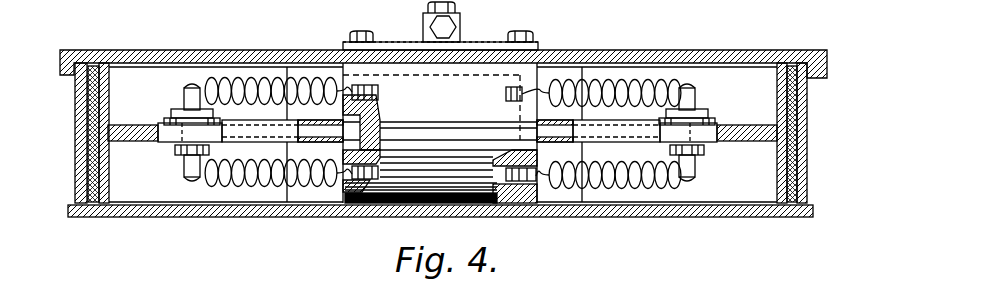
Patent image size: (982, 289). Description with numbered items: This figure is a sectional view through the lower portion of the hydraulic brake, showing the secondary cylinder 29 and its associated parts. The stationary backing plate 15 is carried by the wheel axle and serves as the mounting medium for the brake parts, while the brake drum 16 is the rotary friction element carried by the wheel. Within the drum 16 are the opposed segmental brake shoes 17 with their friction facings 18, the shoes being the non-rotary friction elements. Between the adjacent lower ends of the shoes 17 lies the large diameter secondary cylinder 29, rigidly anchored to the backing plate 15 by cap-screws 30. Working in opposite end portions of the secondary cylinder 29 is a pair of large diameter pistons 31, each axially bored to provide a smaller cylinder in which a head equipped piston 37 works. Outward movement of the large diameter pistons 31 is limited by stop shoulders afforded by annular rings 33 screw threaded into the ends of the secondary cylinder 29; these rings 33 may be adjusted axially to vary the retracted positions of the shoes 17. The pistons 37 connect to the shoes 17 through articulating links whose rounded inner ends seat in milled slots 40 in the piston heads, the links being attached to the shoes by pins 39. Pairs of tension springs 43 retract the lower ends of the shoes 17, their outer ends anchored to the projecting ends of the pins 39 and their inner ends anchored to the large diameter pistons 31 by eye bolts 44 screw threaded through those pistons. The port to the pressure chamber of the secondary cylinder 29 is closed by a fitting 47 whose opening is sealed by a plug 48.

The backing plate 15 is at (804, 52).
The brake drum 16 is at (794, 218).
The segmental brake shoes 17 is at (135, 141).
The friction facings 18 is at (92, 163).
The secondary cylinder 29 is at (417, 212).
The cap-screws 30 is at (372, 23).
The large diameter pistons 31 is at (378, 105).
The annular stop rings 33 is at (343, 196).
The head equipped piston 37 is at (395, 140).
The pins 39 is at (184, 101).
The milled slots 40 is at (352, 132).
The tension springs 43 is at (224, 80).
The eye bolt 44 is at (343, 84).
The fitting 47 is at (423, 26).
The plug 48 is at (447, 26).